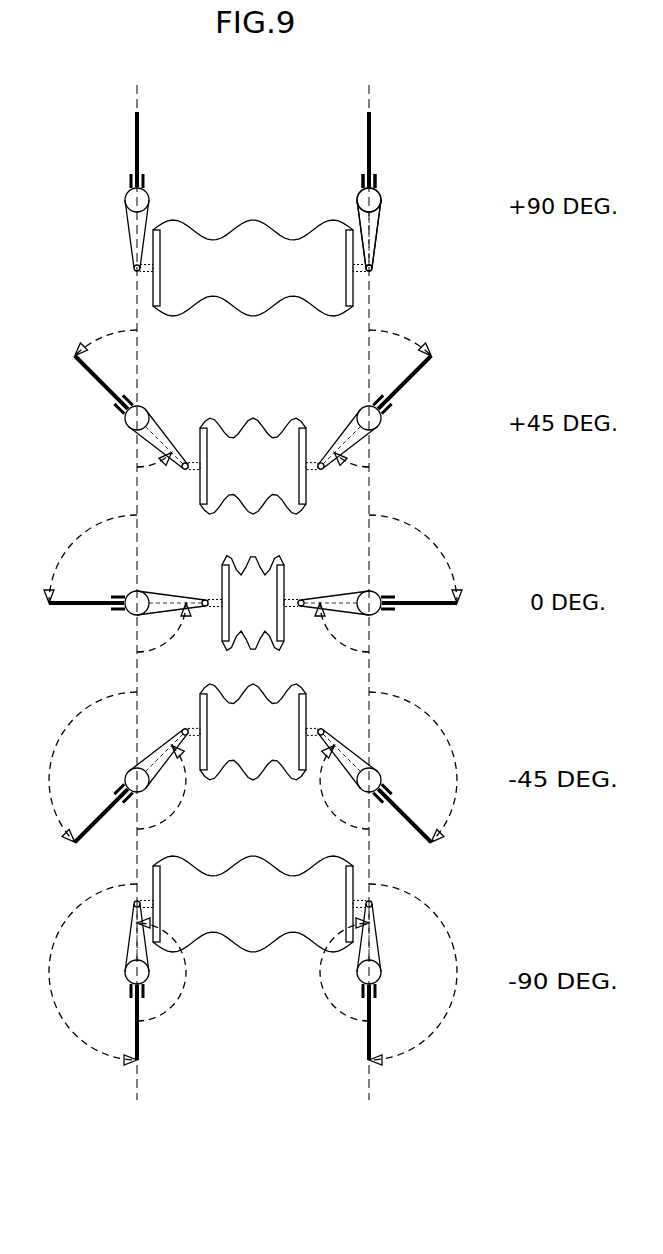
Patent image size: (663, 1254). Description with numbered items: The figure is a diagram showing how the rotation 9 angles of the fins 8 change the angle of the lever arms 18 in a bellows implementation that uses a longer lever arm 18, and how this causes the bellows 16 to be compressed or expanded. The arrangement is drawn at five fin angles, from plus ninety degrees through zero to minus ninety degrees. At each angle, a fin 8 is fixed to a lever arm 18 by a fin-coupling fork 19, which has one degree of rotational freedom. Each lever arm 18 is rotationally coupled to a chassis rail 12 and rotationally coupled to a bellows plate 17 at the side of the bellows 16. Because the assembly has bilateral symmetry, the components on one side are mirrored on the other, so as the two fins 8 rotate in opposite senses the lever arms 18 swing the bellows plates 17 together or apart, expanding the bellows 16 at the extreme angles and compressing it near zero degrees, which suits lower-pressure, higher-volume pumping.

The fin 8 is at (140, 134).
The rotation 9 is at (388, 332).
The chassis rail 12 is at (124, 198).
The bellows 16 is at (278, 296).
The bellows plate 17 is at (150, 288).
The lever arm 18 is at (126, 237).
The fin-coupling fork 19 is at (144, 178).